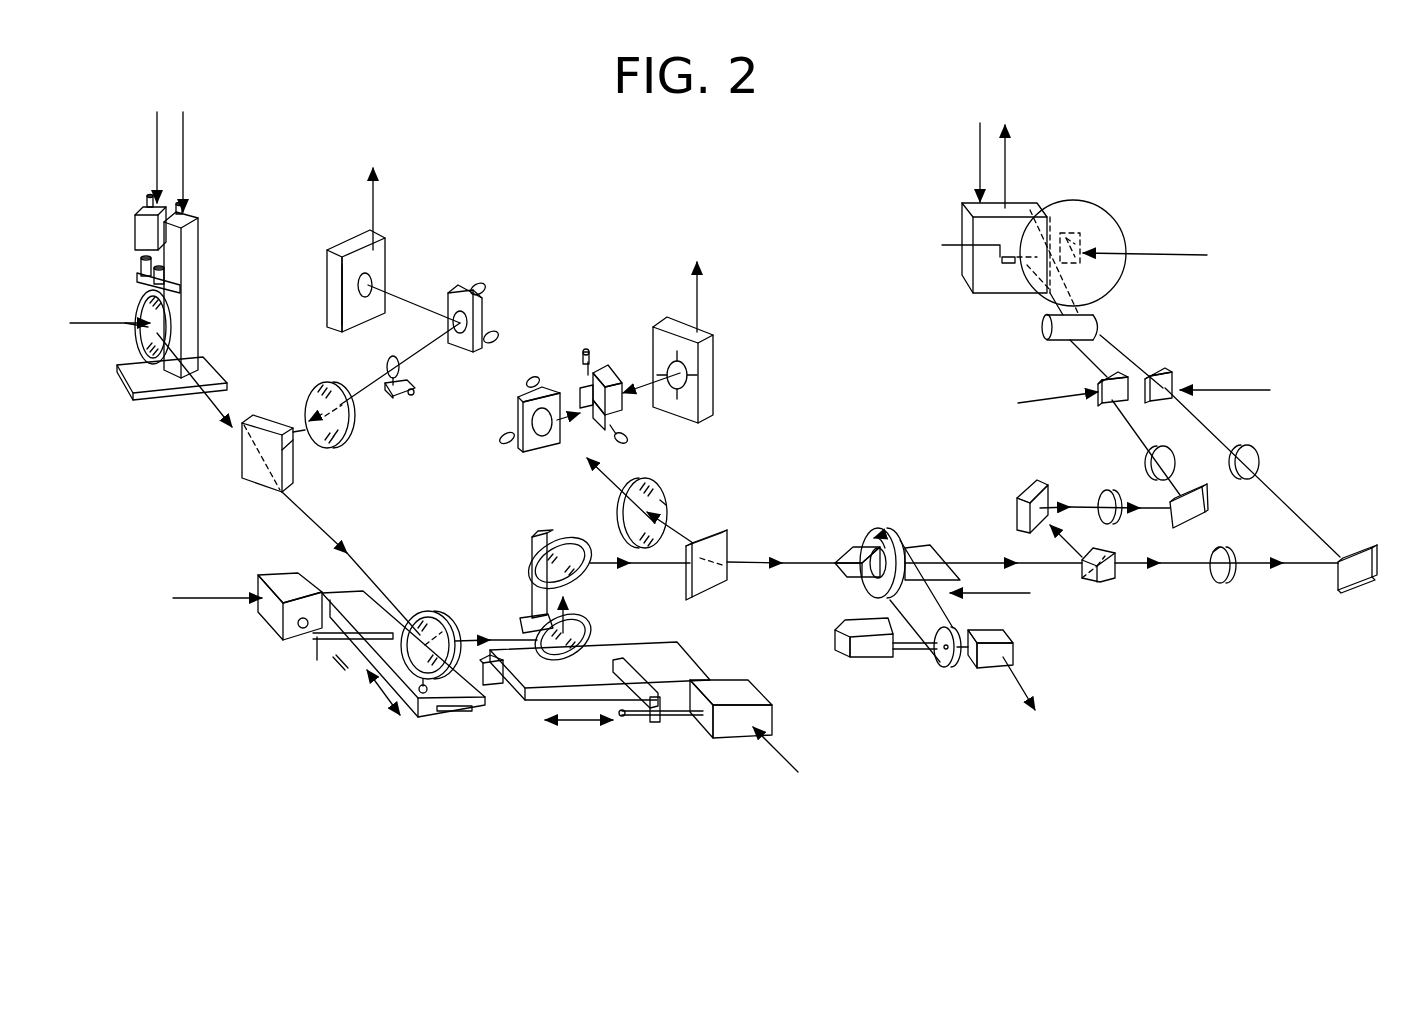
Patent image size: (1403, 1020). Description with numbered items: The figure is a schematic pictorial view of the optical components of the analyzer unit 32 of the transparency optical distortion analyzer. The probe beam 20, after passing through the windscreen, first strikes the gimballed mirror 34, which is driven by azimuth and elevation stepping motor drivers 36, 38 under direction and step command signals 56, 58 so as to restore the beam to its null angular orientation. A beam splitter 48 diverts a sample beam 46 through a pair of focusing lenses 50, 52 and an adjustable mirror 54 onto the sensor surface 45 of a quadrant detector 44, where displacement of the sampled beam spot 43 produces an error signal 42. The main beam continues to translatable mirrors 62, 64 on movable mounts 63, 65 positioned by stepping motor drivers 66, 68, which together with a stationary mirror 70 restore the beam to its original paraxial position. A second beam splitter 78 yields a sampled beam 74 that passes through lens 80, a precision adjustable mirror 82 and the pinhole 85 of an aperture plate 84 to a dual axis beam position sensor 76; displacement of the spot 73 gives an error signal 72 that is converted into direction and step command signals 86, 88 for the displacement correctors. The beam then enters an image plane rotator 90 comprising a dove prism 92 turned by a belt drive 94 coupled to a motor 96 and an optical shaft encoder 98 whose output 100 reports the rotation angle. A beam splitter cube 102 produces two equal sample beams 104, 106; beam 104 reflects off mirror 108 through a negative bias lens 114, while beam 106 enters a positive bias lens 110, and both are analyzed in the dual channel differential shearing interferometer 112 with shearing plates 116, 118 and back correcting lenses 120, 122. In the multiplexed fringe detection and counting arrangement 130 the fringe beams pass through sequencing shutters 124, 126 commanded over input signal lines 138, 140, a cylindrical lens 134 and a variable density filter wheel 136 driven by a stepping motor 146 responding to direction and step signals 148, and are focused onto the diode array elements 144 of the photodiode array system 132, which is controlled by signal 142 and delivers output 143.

The probe beam 20 is at (97, 326).
The analyzer unit 32 is at (498, 765).
The gimballed mirror 34 is at (135, 300).
The azimuth stepping motor driver 36 is at (137, 233).
The elevation stepping motor driver 38 is at (173, 243).
The error signal 42 is at (376, 198).
The sampled beam spot 43 is at (368, 285).
The quadrant detector 44 is at (327, 262).
The sensor surface 45 is at (345, 287).
The sample beam 46 is at (300, 440).
The beam splitter 48 is at (240, 468).
The focusing lens 50 is at (352, 432).
The focusing lens 52 is at (400, 362).
The mirror 54 is at (478, 318).
The direction and step command signal 56 is at (155, 152).
The direction and step command signal 58 is at (185, 142).
The translatable mirror 62 is at (436, 610).
The movable mount 63 is at (432, 720).
The translatable mirror 64 is at (592, 618).
The movable mount 65 is at (535, 704).
The stepping motor driver 66 is at (283, 577).
The stepping motor driver 68 is at (757, 690).
The stationary mirror 70 is at (590, 575).
The error signal 72 is at (698, 296).
The spot 73 is at (688, 372).
The sampled beam 74 is at (680, 530).
The dual axis beam position sensor 76 is at (713, 395).
The beam splitter 78 is at (714, 590).
The lens 80 is at (668, 490).
The precision adjustable mirror 82 is at (543, 452).
The pinhole aperture plate 84 is at (598, 372).
The pinhole 85 is at (618, 412).
The direction and step command signal 86 is at (208, 600).
The direction and step command signal 88 is at (798, 772).
The image plane rotator 90 is at (853, 530).
The dove prism 92 is at (920, 543).
The belt drive 94 is at (1011, 597).
The motor 96 is at (917, 657).
The optical shaft encoder 98 is at (1015, 655).
The shaft encoder output 100 is at (1013, 683).
The beam splitter cube 102 is at (1105, 585).
The sample beam 104 is at (1067, 545).
The sample beam 106 is at (1208, 572).
The mirror 108 is at (1017, 495).
The bias lens 110 is at (1233, 552).
The dual channel differential shearing interferometer 112 is at (1117, 462).
The bias lens 114 is at (1100, 490).
The shearing plate 116 is at (1195, 525).
The shearing plate 118 is at (1355, 592).
The back correcting lens 120 is at (1150, 467).
The back correcting lens 122 is at (1252, 447).
The sequencing shutter 124 is at (1097, 385).
The sequencing shutter 126 is at (1160, 368).
The multiplexed fringe detection and counting arrangement 130 is at (947, 302).
The photodiode array system 132 is at (958, 233).
The cylindrical lens 134 is at (1103, 322).
The variable density filter wheel 136 is at (1080, 200).
The input signal line 138 is at (1018, 403).
The input signal line 140 is at (1217, 390).
The control signal 142 is at (978, 163).
The photodiode array output 143 is at (1007, 165).
The diode array elements 144 is at (969, 259).
The stepping motor 146 is at (1077, 235).
The direction and step signals 148 is at (1157, 253).